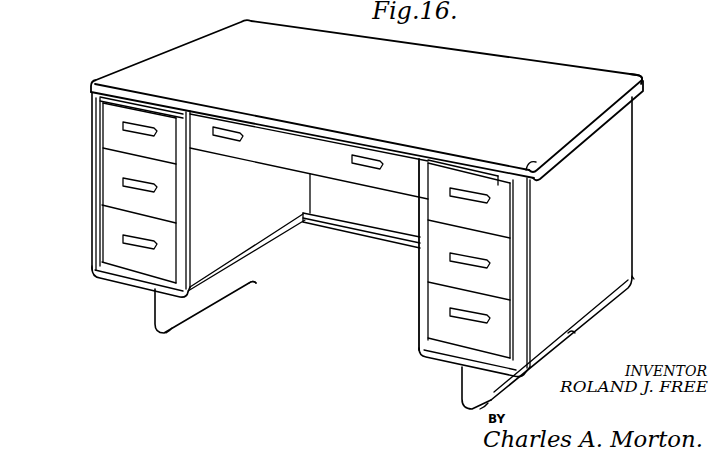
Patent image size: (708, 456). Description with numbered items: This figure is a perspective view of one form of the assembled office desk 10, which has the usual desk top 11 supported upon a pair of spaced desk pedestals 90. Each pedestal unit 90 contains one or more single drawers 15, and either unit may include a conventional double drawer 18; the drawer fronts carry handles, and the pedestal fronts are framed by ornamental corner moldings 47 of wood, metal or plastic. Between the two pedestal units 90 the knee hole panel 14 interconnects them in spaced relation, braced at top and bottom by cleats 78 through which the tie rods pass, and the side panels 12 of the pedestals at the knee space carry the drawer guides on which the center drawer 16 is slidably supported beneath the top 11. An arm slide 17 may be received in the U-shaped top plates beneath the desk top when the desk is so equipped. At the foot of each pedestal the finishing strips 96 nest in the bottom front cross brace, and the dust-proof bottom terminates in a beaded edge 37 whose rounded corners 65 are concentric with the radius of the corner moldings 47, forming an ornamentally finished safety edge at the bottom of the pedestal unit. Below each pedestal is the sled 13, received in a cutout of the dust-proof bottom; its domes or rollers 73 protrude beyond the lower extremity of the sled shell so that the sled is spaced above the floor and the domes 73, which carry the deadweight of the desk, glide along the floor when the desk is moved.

The office desk 10 is at (486, 64).
The desk top 11 is at (646, 88).
The side panel 12 is at (278, 223).
The sled 13 is at (229, 292).
The knee hole panel 14 is at (360, 222).
The single drawer 15 is at (108, 218).
The center drawer 16 is at (398, 179).
The arm slide 17 is at (107, 103).
The double drawer 18 is at (440, 267).
The beaded edge 37 is at (92, 269).
The corner molding 47 is at (82, 0).
The corner of dust-proof bottom 65 is at (647, 278).
The dome or roller 73 is at (251, 283).
The cleat 78 is at (398, 241).
The desk pedestal 90 is at (92, 130).
The finishing strip 96 is at (113, 112).